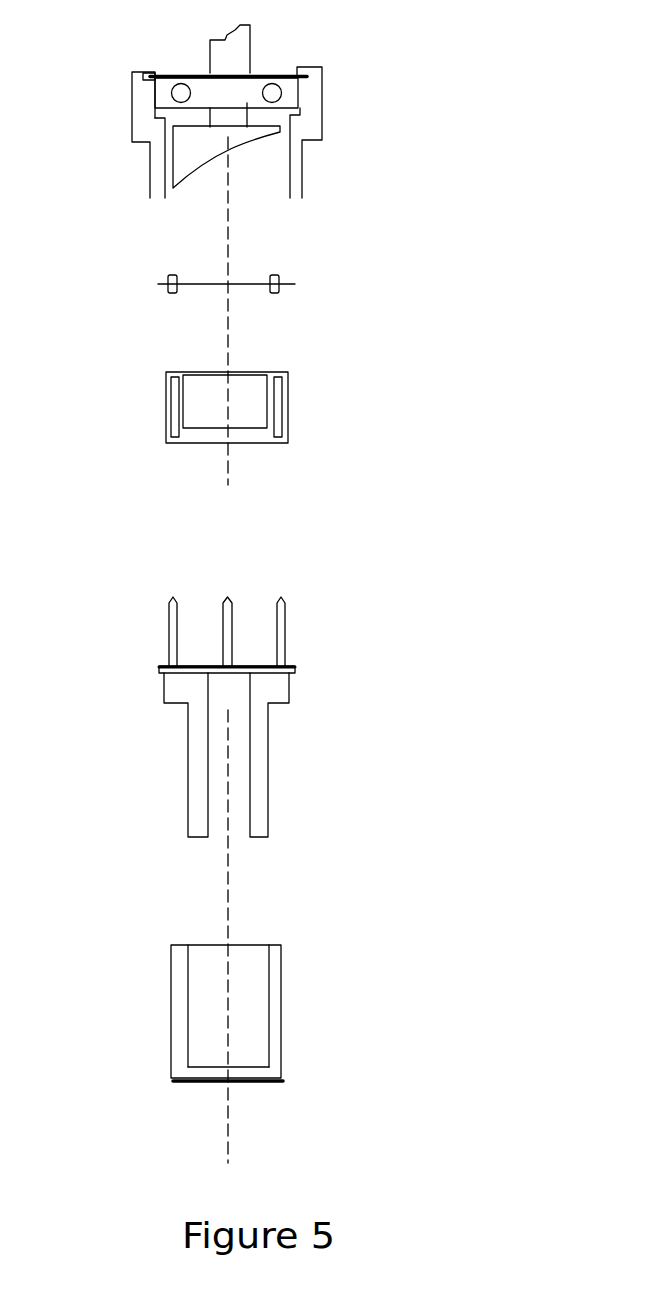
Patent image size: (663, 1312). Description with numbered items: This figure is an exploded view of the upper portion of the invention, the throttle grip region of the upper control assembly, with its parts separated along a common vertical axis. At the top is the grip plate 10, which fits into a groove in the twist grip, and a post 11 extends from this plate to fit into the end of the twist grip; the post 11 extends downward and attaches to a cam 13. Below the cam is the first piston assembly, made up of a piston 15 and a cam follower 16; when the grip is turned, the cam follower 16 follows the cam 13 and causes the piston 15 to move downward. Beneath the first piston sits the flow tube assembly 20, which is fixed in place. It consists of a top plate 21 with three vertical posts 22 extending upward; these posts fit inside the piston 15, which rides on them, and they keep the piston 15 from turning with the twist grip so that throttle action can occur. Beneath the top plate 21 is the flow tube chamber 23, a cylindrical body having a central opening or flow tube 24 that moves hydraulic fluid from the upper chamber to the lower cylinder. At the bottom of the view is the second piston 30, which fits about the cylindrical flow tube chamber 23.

The grip plate 10 is at (198, 77).
The post 11 is at (255, 47).
The cam 13 is at (243, 150).
The piston 15 is at (303, 403).
The cam follower 16 is at (282, 285).
The flow tube assembly 20 is at (280, 742).
The top plate 21 is at (159, 670).
The vertical posts 22 is at (168, 627).
The flow tube chamber 23 is at (277, 770).
The flow tube 24 is at (238, 810).
The second piston 30 is at (282, 1017).